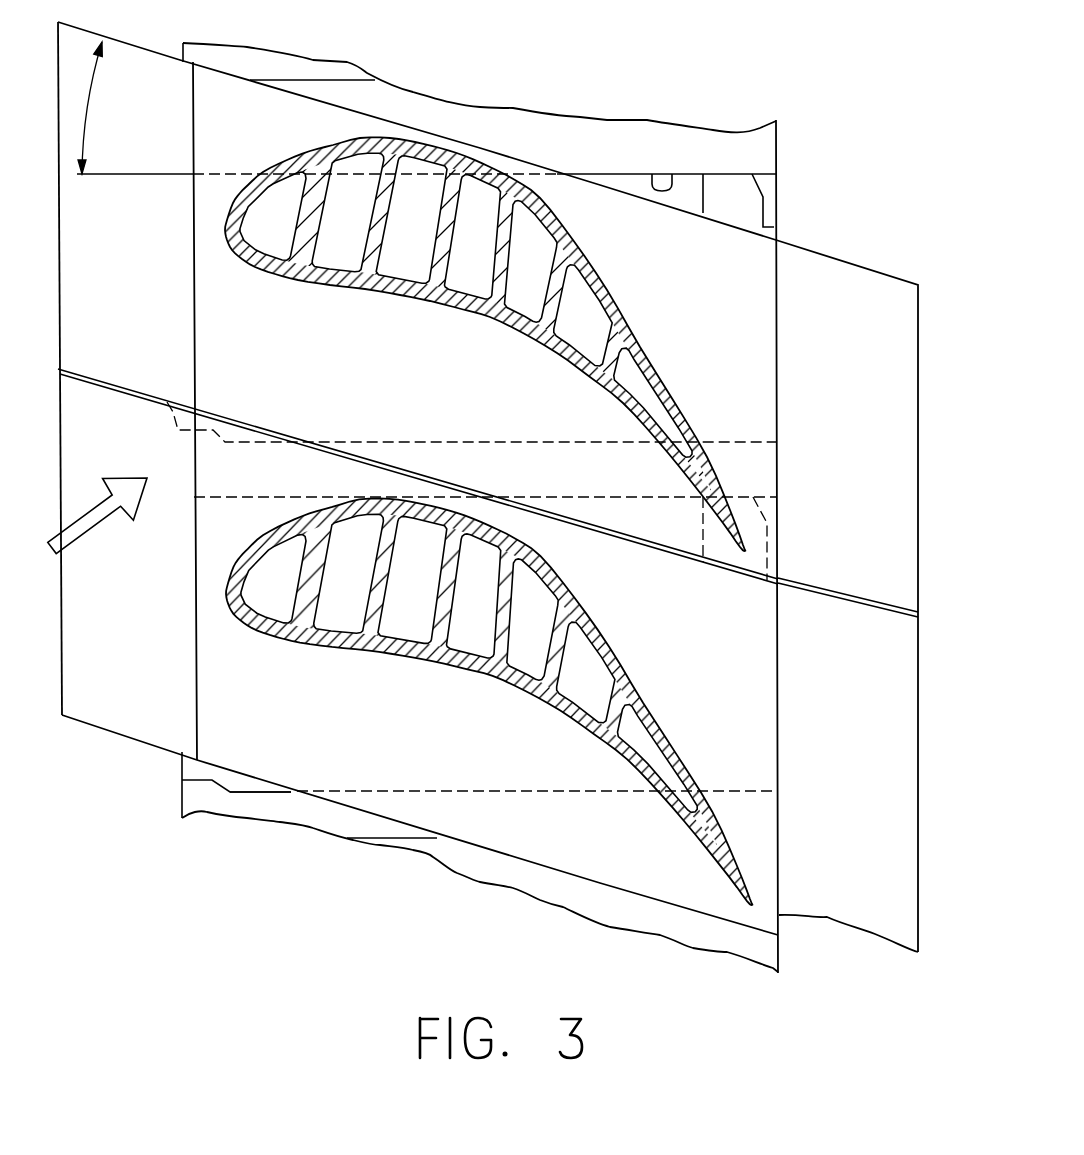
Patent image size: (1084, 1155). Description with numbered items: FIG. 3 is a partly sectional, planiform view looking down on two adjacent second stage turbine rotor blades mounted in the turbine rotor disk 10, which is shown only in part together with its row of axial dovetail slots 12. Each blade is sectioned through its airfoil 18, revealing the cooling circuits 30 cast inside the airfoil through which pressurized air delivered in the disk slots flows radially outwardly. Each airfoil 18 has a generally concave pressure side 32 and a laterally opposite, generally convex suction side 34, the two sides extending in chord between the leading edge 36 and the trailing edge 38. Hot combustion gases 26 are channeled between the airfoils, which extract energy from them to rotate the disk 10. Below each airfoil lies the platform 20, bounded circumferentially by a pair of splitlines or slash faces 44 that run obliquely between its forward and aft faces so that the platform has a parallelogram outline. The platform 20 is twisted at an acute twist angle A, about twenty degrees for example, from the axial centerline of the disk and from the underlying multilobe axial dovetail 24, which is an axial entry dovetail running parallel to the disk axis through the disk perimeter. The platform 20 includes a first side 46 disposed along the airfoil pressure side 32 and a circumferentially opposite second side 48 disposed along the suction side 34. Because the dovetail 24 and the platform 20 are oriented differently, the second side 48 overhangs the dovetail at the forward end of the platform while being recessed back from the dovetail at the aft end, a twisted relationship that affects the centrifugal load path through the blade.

The turbine rotor disk 10 is at (598, 117).
The axial dovetail slots 12 is at (672, 174).
The airfoil 18 is at (353, 646).
The platform 20 is at (246, 329).
The multilobe axial dovetail 24 is at (588, 174).
The hot combustion gases 26 is at (87, 537).
The cooling circuits 30 is at (363, 225).
The pressure side 32 is at (422, 292).
The suction side 34 is at (490, 172).
The leading edge 36 is at (225, 238).
The trailing edge 38 is at (746, 556).
The splitlines or slash faces 44 is at (380, 119).
The platform first side 46 is at (610, 476).
The platform second side 48 is at (260, 137).
The twist angle A is at (88, 100).